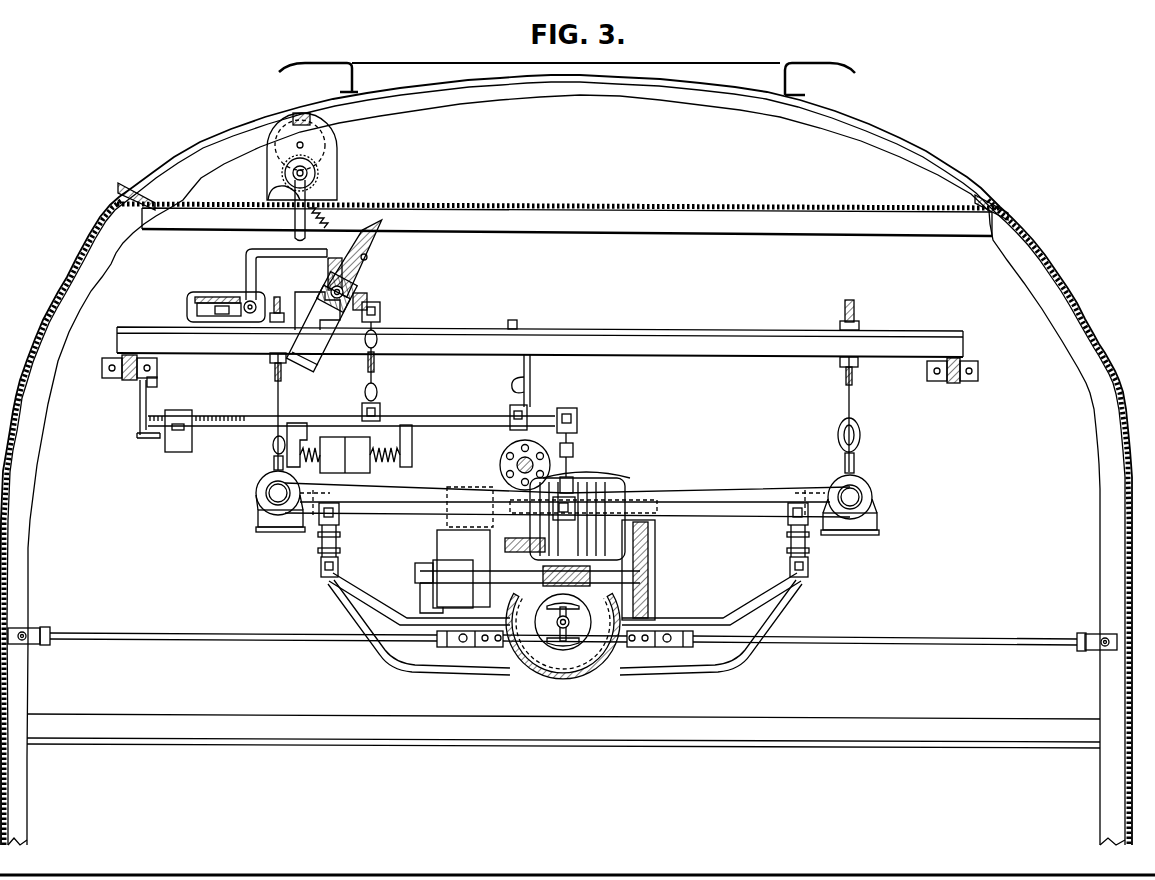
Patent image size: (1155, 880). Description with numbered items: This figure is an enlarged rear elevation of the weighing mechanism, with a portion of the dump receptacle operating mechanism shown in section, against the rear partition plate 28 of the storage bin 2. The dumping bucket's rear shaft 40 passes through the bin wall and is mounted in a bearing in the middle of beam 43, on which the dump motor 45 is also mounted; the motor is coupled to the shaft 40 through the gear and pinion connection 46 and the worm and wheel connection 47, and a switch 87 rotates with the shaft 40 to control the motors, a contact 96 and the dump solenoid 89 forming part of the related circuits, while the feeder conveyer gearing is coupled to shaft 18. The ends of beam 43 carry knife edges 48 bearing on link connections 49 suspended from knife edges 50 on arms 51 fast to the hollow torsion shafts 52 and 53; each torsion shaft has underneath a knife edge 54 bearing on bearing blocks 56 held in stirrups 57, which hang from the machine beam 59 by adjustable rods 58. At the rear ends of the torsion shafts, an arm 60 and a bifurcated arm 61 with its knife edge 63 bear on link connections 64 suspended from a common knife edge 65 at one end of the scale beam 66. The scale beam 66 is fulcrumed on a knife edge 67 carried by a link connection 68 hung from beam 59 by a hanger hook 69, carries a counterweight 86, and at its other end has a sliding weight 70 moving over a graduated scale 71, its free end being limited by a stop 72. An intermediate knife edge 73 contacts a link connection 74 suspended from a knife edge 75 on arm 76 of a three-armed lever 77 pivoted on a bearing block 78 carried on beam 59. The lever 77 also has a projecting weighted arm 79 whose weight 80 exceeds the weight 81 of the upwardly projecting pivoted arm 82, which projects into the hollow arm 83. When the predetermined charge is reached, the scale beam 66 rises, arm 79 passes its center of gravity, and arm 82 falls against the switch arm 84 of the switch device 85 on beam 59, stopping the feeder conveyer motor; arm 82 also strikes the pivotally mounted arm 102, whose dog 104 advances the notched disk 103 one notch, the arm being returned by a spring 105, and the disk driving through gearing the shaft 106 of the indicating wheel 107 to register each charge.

The storage bin 2 is at (758, 78).
The rear partition plate 28 is at (560, 160).
The indicating wheel 107 is at (282, 122).
The shaft 106 is at (305, 144).
The notched disk 103 is at (318, 172).
The dog 104 is at (268, 197).
The pivotally mounted arm 102 is at (296, 226).
The spring 105 is at (327, 216).
The weight 81 is at (357, 232).
The switch arm 84 is at (258, 250).
The hollow arm 83 is at (334, 258).
The upwardly projecting pivotally mounted arm 82 is at (367, 257).
The switch device 85 is at (236, 292).
The bearing block 78 is at (316, 296).
The three-armed lever 77 is at (362, 290).
The arm 76 is at (367, 301).
The knife edge 75 is at (381, 312).
The hanger hook 69 is at (528, 358).
The beam 59 is at (594, 329).
The link connection 74 is at (375, 369).
The projecting weighted arm 79 is at (314, 370).
The weight 80 is at (305, 379).
The knife edge 73 is at (381, 404).
The scale beam 66 is at (440, 416).
The link connection 68 is at (532, 386).
The knife edge 67 is at (527, 412).
The adjustable rods 58 is at (277, 389).
The sliding weight 70 is at (177, 413).
The stop 72 is at (140, 406).
The graduated scale 71 is at (240, 430).
The knife edge 65 is at (578, 420).
The shaft 18 is at (512, 458).
The link connections 64 is at (574, 460).
The dump motor 45 is at (600, 483).
The bifurcated arm 61 is at (725, 490).
The arms 51 is at (318, 500).
The stirrups 57 is at (274, 465).
The hollow torsion shaft 53 is at (858, 495).
The counterweight 86 is at (349, 448).
The arm 60 is at (420, 487).
The dump solenoid 89 is at (465, 488).
The knife edge 63 is at (576, 504).
The hollow torsion shaft 52 is at (266, 494).
The knife edge 54 is at (262, 519).
The bearing blocks 56 is at (270, 531).
The knife edges 50 is at (340, 522).
The link connections 49 is at (318, 546).
The knife edges 48 is at (320, 570).
The gear and pinion connection 46 is at (655, 551).
The worm and wheel connection 47 is at (486, 574).
The contact 96 is at (560, 606).
The shaft 40 is at (560, 626).
The switch 87 is at (565, 648).
The beam 43 is at (632, 675).